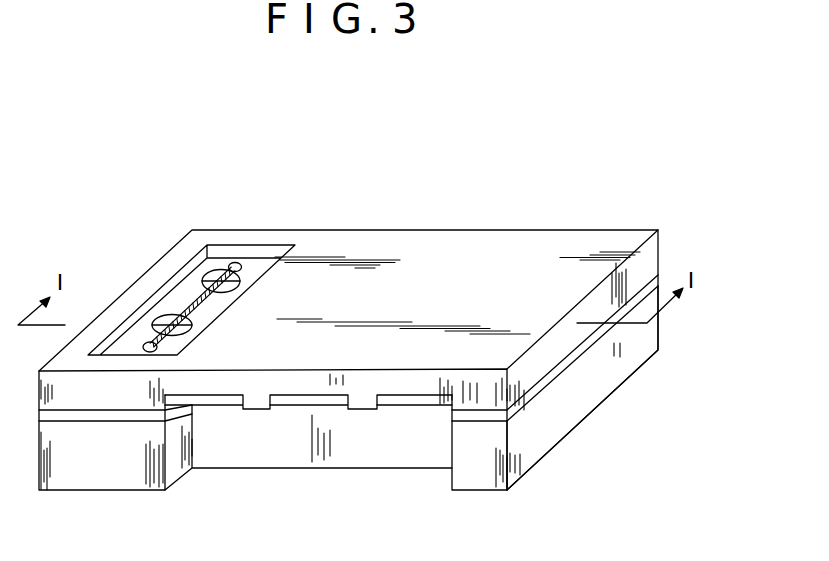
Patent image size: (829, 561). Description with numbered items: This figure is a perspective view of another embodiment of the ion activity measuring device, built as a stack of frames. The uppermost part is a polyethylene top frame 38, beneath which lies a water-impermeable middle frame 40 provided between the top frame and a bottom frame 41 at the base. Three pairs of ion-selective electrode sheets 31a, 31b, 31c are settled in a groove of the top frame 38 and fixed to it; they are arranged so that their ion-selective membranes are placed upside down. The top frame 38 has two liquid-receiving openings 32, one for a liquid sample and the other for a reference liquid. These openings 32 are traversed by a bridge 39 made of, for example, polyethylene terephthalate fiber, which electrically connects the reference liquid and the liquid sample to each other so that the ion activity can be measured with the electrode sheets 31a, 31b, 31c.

The top frame 38 is at (547, 235).
The water-impermeable middle frame 40 is at (658, 277).
The bottom frame 41 is at (652, 342).
The liquid-receiving openings 32 is at (162, 320).
The bridge 39 is at (214, 283).
The ion-selective electrode sheets 31a is at (213, 405).
The ion-selective electrode sheets 31b is at (300, 405).
The ion-selective electrode sheets 31c is at (413, 405).